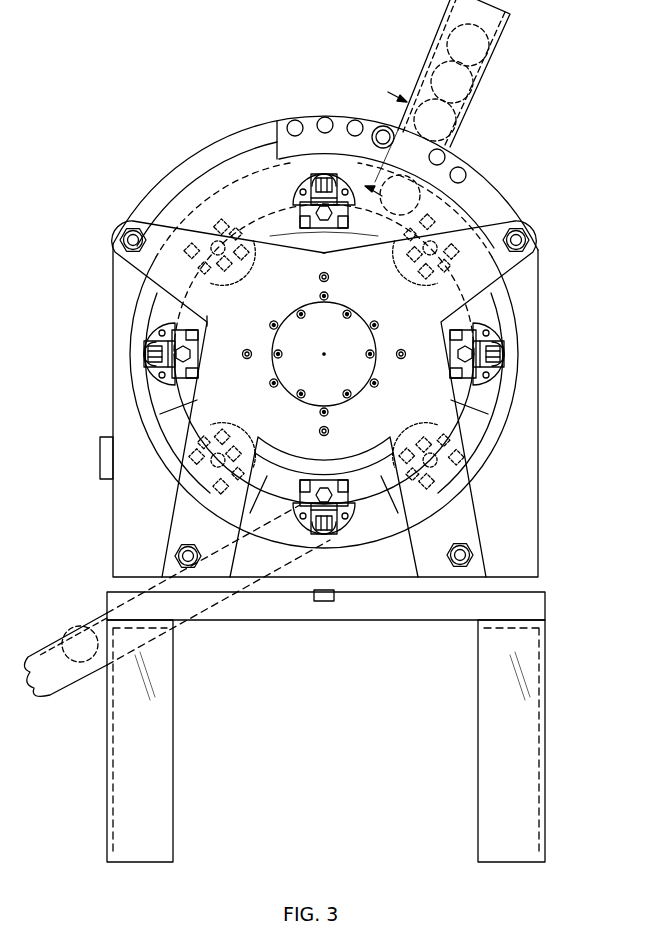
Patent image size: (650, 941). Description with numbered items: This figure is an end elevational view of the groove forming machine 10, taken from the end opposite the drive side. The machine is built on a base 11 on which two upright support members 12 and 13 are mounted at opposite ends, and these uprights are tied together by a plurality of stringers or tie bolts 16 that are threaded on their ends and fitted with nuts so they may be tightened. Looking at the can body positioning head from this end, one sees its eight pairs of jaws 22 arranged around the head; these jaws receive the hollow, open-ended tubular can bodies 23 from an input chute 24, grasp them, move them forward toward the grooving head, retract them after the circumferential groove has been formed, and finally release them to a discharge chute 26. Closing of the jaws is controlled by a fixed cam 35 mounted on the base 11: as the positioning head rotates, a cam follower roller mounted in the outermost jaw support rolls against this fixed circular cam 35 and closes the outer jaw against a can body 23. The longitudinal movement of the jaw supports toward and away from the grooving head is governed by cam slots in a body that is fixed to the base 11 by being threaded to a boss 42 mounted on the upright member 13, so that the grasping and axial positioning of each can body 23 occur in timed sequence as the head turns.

The groove forming machine 10 is at (157, 458).
The base 11 is at (368, 612).
The upright support member 12 is at (375, 137).
The upright support member 13 is at (413, 386).
The tie bolts 16 is at (122, 232).
The pairs of jaws 22 is at (214, 226).
The can bodies 23 is at (450, 44).
The input chute 24 is at (483, 72).
The discharge chute 26 is at (75, 690).
The fixed cam 35 is at (490, 470).
The boss 42 is at (312, 250).